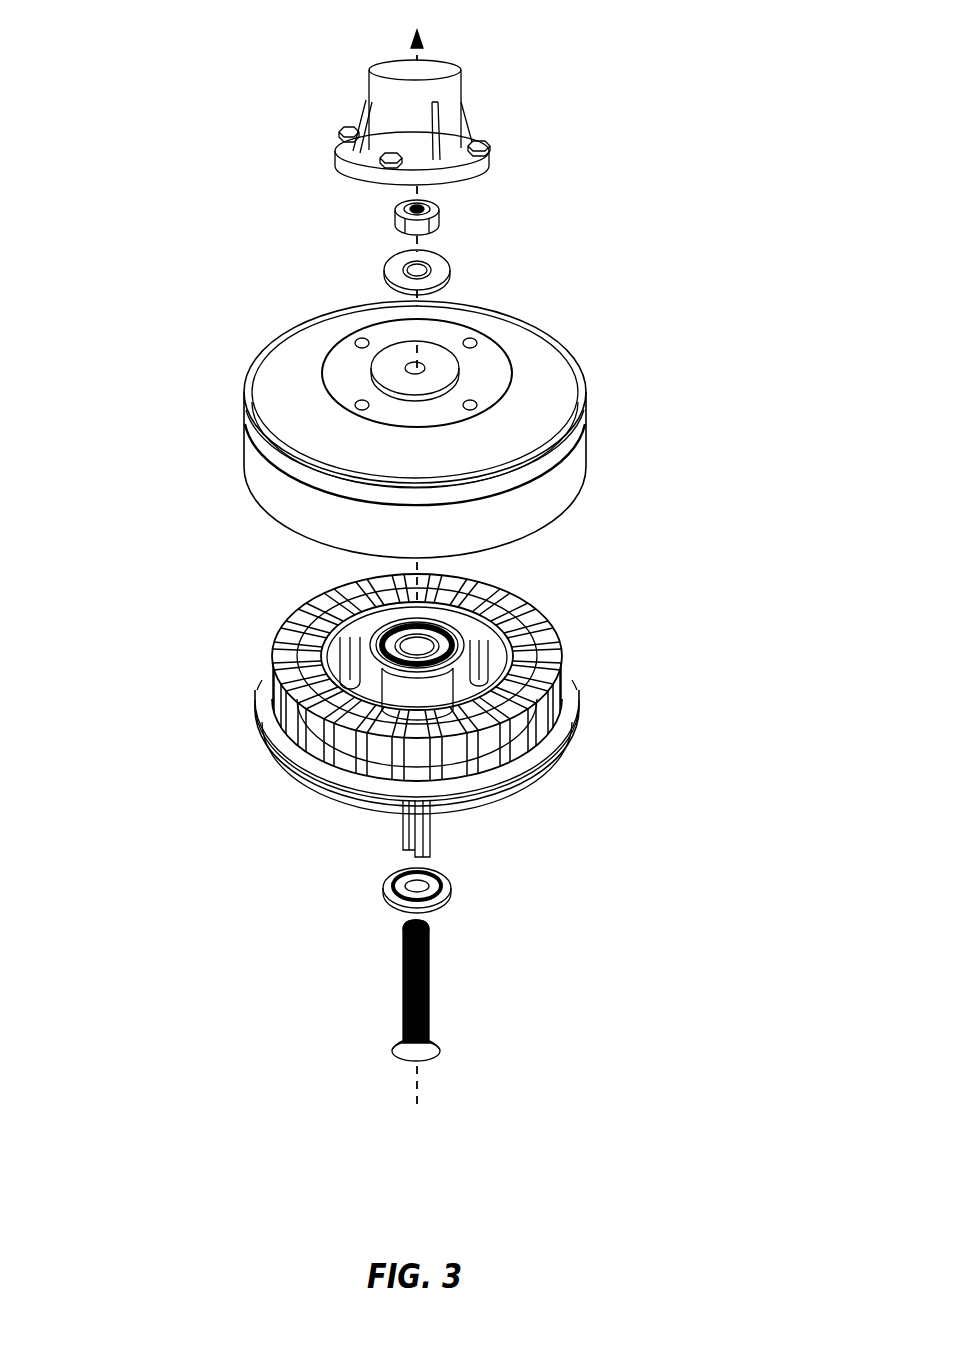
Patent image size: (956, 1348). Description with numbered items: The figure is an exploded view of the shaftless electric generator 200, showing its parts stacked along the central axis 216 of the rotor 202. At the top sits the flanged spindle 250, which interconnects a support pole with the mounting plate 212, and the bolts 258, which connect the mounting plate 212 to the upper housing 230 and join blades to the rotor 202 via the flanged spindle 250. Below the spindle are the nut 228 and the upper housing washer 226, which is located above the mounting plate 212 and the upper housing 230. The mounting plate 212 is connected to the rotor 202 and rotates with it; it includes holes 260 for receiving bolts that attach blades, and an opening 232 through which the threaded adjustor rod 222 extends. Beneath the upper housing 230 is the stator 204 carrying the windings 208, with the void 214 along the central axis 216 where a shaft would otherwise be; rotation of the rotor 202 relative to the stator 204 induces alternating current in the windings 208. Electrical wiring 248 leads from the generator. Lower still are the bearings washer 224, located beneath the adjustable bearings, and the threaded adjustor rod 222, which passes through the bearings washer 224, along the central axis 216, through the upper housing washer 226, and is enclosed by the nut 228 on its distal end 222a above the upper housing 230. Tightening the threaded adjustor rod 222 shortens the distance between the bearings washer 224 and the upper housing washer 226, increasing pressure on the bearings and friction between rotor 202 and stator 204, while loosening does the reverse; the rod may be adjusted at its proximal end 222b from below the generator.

The shaftless electric generator 200 is at (157, 77).
The rotor 202 is at (246, 445).
The stator 204 is at (268, 730).
The windings 208 is at (275, 655).
The mounting plate 212 is at (483, 353).
The void 214 is at (430, 651).
The central axis 216 is at (420, 570).
The threaded adjustor rod 222 is at (405, 972).
The distal end 222a is at (405, 922).
The proximal end 222b is at (395, 1040).
The bearings washer 224 is at (385, 886).
The upper housing washer 226 is at (392, 273).
The nut 228 is at (400, 214).
The upper housing 230 is at (507, 428).
The opening 232 is at (408, 369).
The electrical wiring 248 is at (400, 824).
The flanged spindle 250 is at (382, 91).
The bolts 258 is at (486, 147).
The holes 260 is at (468, 411).